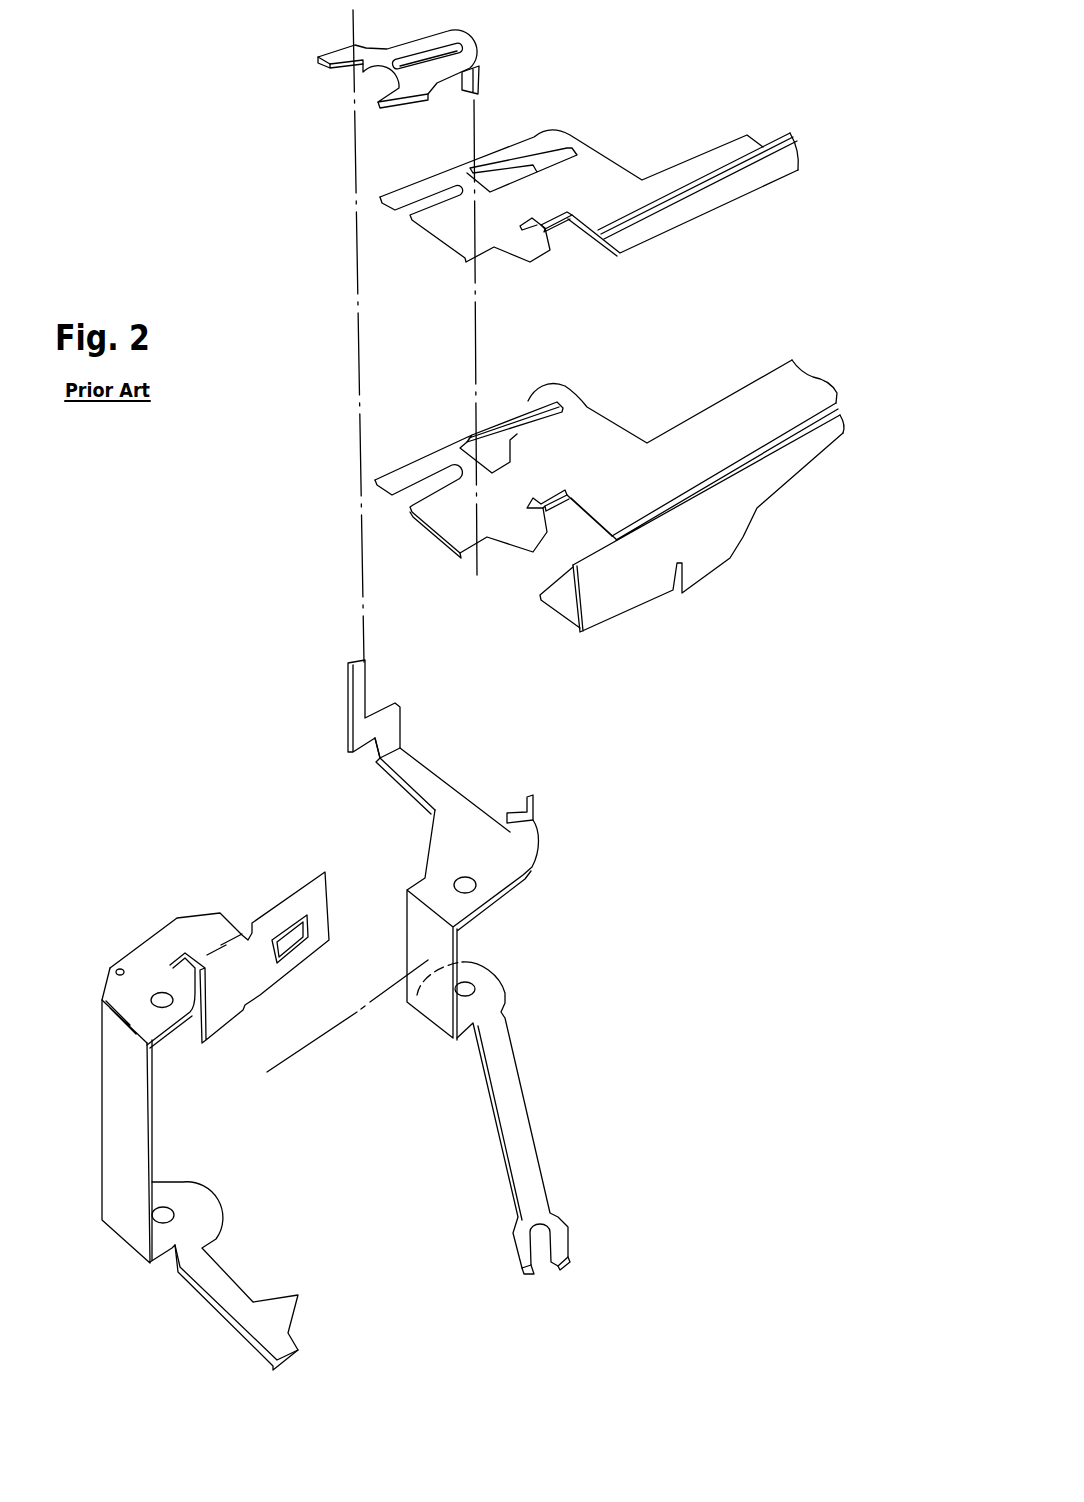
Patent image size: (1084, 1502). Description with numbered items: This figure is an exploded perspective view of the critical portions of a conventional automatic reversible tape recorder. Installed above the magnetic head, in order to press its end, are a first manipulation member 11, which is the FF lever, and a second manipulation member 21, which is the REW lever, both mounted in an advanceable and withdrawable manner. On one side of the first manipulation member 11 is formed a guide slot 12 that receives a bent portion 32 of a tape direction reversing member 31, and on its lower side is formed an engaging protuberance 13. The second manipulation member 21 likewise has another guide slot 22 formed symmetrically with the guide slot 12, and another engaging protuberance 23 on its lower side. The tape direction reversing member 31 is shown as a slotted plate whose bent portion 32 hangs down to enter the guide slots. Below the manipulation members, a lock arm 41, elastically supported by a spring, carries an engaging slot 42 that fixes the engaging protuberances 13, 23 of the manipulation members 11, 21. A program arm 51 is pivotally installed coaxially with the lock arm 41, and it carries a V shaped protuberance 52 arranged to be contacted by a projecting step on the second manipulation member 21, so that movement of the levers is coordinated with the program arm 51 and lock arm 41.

The first manipulation member 11 is at (589, 200).
The guide slot 12 is at (550, 157).
The engaging protuberance 13 is at (548, 247).
The second manipulation member 21 is at (609, 496).
The guide slot 22 is at (530, 420).
The engaging protuberance 23 is at (522, 532).
The tape direction reversing member 31 is at (436, 56).
The bent portion 32 is at (482, 77).
The lock arm 41 is at (215, 1112).
The engaging slot 42 is at (290, 937).
The program arm 51 is at (478, 967).
The V shaped protuberance 52 is at (533, 820).